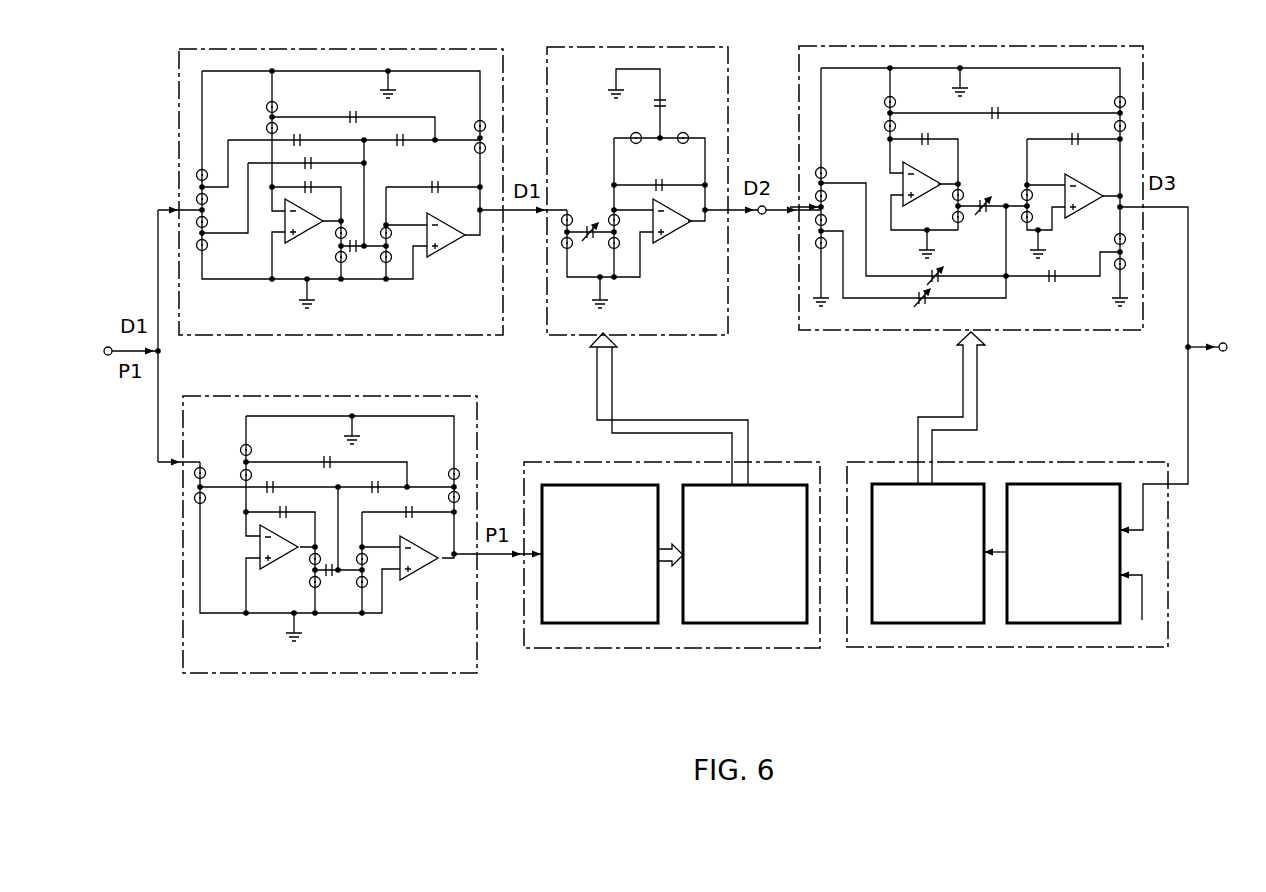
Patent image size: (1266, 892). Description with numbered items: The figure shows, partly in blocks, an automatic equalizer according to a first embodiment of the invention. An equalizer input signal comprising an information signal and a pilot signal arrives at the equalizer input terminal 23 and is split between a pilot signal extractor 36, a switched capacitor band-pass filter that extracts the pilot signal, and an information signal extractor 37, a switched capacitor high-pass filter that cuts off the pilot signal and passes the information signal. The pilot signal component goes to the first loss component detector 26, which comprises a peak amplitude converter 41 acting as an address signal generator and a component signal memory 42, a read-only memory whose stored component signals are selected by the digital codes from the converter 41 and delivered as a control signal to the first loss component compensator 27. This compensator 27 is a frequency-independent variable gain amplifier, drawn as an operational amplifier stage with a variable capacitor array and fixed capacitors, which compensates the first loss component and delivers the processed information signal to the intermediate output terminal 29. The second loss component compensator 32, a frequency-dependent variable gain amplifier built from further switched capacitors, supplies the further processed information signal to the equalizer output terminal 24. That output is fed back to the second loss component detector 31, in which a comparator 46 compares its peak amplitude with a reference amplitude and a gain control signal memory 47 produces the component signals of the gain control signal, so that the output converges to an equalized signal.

The equalizer input terminal 23 is at (104, 355).
The equalizer output terminal 24 is at (1223, 351).
The first loss component detector 26 is at (672, 539).
The first loss component compensator 27 is at (643, 336).
The intermediate output terminal 29 is at (762, 214).
The second loss component detector 31 is at (1007, 514).
The second loss component compensator 32 is at (912, 335).
The pilot signal extractor 36 is at (242, 675).
The information signal extractor 37 is at (212, 337).
The peak amplitude converter 41 is at (578, 625).
The component signal memory 42 is at (720, 625).
The comparator 46 is at (1044, 625).
The gain control signal memory 47 is at (895, 625).